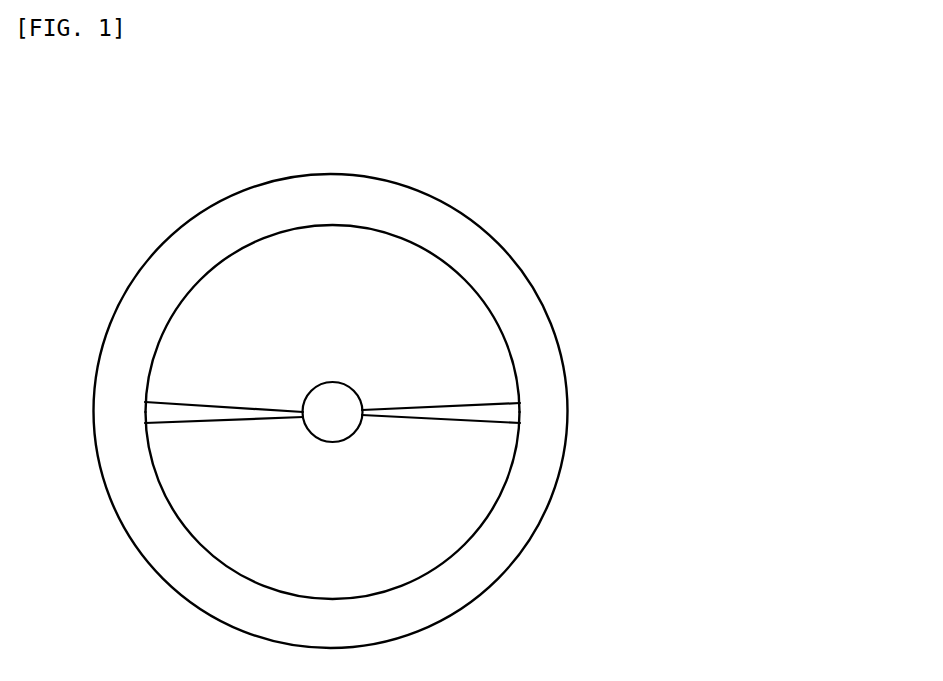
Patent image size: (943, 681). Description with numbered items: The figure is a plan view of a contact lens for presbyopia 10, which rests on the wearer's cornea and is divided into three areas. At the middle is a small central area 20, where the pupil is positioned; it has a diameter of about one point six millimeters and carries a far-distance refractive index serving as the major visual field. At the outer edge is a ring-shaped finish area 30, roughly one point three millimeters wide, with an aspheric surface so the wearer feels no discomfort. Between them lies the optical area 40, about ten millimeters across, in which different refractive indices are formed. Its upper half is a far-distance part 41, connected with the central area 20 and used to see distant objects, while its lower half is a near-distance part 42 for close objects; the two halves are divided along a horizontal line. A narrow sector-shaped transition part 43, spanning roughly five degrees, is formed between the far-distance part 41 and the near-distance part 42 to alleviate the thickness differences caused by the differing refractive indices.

The contact lens for presbyopia 10 is at (680, 192).
The central area 20 is at (333, 410).
The finish area 30 is at (440, 592).
The optical area 40 is at (453, 412).
The far-distance part 41 is at (433, 368).
The near-distance part 42 is at (455, 482).
The transition part 43 is at (491, 405).